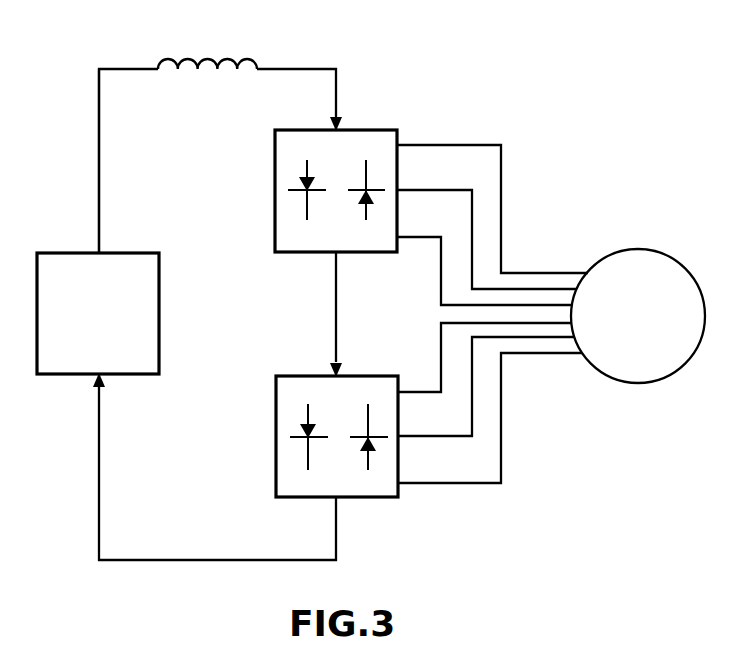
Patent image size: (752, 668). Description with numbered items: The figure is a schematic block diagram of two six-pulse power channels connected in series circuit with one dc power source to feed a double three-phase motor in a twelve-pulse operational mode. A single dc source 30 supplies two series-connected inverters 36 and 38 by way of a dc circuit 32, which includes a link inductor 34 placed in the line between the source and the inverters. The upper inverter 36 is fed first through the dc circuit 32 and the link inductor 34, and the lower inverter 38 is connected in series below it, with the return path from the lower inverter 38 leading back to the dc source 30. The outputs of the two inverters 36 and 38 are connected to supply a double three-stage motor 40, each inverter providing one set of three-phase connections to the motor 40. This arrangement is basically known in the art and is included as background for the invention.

The dc source 30 is at (161, 290).
The dc circuit 32 is at (139, 188).
The link inductor 34 is at (227, 56).
The inverter 36 is at (275, 183).
The inverter 38 is at (276, 420).
The double three-stage motor 40 is at (658, 247).